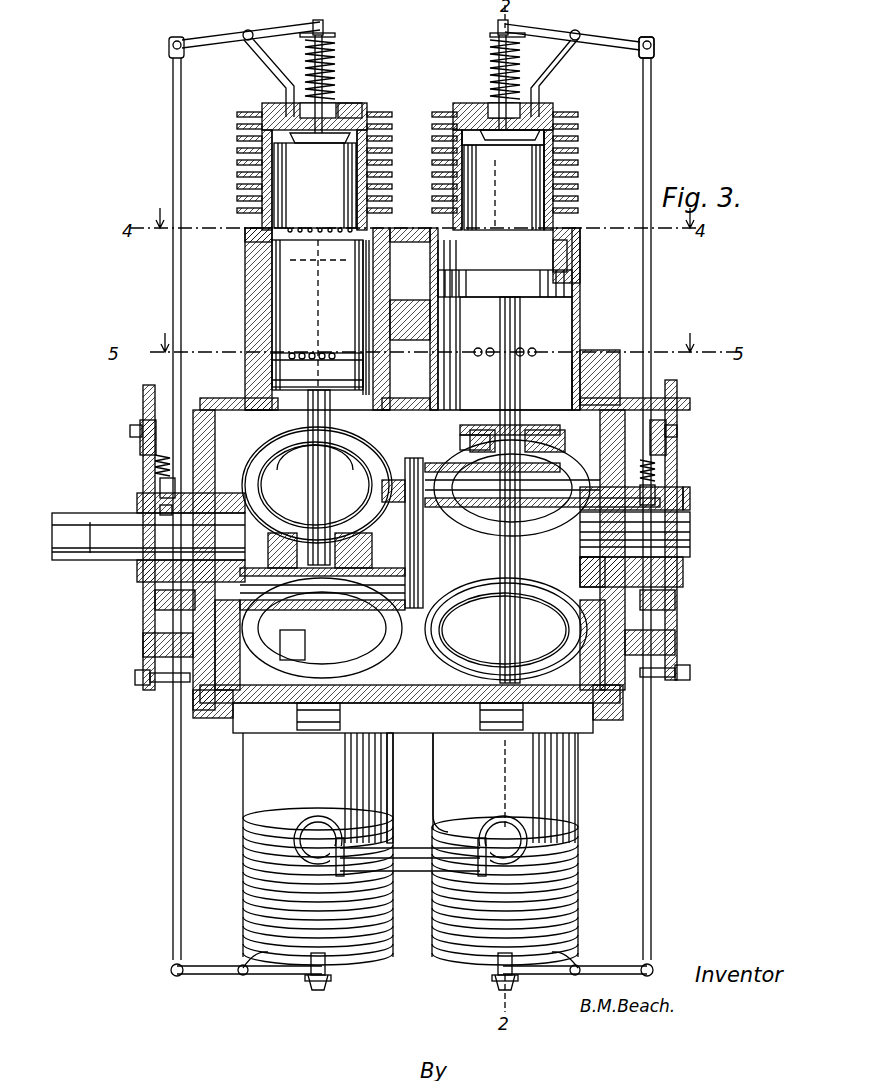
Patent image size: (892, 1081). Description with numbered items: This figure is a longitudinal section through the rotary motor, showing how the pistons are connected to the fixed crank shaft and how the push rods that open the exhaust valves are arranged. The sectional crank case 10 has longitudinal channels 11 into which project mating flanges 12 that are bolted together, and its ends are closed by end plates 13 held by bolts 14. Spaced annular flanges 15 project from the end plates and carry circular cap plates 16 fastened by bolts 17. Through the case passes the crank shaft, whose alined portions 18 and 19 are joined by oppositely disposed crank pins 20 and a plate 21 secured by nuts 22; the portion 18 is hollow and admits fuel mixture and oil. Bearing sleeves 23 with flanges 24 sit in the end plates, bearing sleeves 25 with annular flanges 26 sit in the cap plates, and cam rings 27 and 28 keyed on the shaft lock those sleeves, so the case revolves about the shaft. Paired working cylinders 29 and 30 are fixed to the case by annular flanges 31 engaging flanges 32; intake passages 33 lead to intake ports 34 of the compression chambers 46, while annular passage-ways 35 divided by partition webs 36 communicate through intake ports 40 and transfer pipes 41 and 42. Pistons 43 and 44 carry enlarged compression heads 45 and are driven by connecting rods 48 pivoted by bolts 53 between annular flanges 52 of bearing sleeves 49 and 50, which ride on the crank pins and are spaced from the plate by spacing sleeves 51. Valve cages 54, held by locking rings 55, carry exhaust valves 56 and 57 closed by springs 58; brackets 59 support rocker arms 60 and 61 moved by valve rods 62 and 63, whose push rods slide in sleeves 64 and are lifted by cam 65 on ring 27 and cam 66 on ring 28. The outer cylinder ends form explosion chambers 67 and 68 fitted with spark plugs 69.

The crank case 10 is at (410, 845).
The channels 11 is at (590, 740).
The mating flanges 12 is at (500, 735).
The end plates 13 is at (225, 715).
The bolts 14 is at (215, 700).
The annular flanges 15 is at (145, 648).
The cap plates 16 is at (72, 520).
The bolts 17 is at (145, 678).
The crank shaft portion 18 is at (630, 620).
The crank shaft portion 19 is at (670, 530).
The crank pins 20 is at (445, 480).
The plate 21 is at (423, 556).
The nuts 22 is at (395, 478).
The bearing sleeves 23 is at (268, 480).
The flanges 24 is at (630, 490).
The bearing sleeves 25 is at (140, 490).
The annular flanges 26 is at (716, 578).
The cam ring 27 is at (690, 492).
The cam ring 28 is at (135, 540).
The working cylinder 29 is at (560, 152).
The working cylinder 30 is at (270, 146).
The annular flanges 31 is at (580, 350).
The flanges 32 is at (425, 330).
The intake passages 33 is at (332, 735).
The intake ports 34 is at (533, 358).
The annular passage-ways 35 is at (385, 230).
The partition webs 36 is at (565, 250).
The intake ports 40 is at (312, 226).
The transfer pipe 41 is at (410, 950).
The transfer pipe 42 is at (404, 788).
The working piston 43 is at (530, 210).
The working piston 44 is at (290, 280).
The compression heads 45 is at (265, 375).
The compression chambers 46 is at (265, 300).
The connecting rods 48 is at (328, 515).
The bearing sleeve 49 is at (522, 540).
The bearing sleeve 50 is at (360, 562).
The spacing sleeves 51 is at (372, 600).
The annular flanges 52 is at (285, 535).
The bolts 53 is at (472, 438).
The valve cages 54 is at (482, 115).
The locking rings 55 is at (345, 105).
The exhaust valve 56 is at (515, 50).
The exhaust valve 57 is at (330, 65).
The springs 58 is at (322, 40).
The brackets 59 is at (262, 50).
The rocker arm 60 is at (617, 40).
The rocker arm 61 is at (282, 985).
The valve rod 62 is at (651, 155).
The valve rod 63 is at (172, 200).
The sleeves 64 is at (148, 440).
The cam 65 is at (690, 545).
The cam 66 is at (135, 510).
The explosion chamber 67 is at (540, 130).
The explosion chamber 68 is at (325, 155).
The spark plugs 69 is at (335, 150).